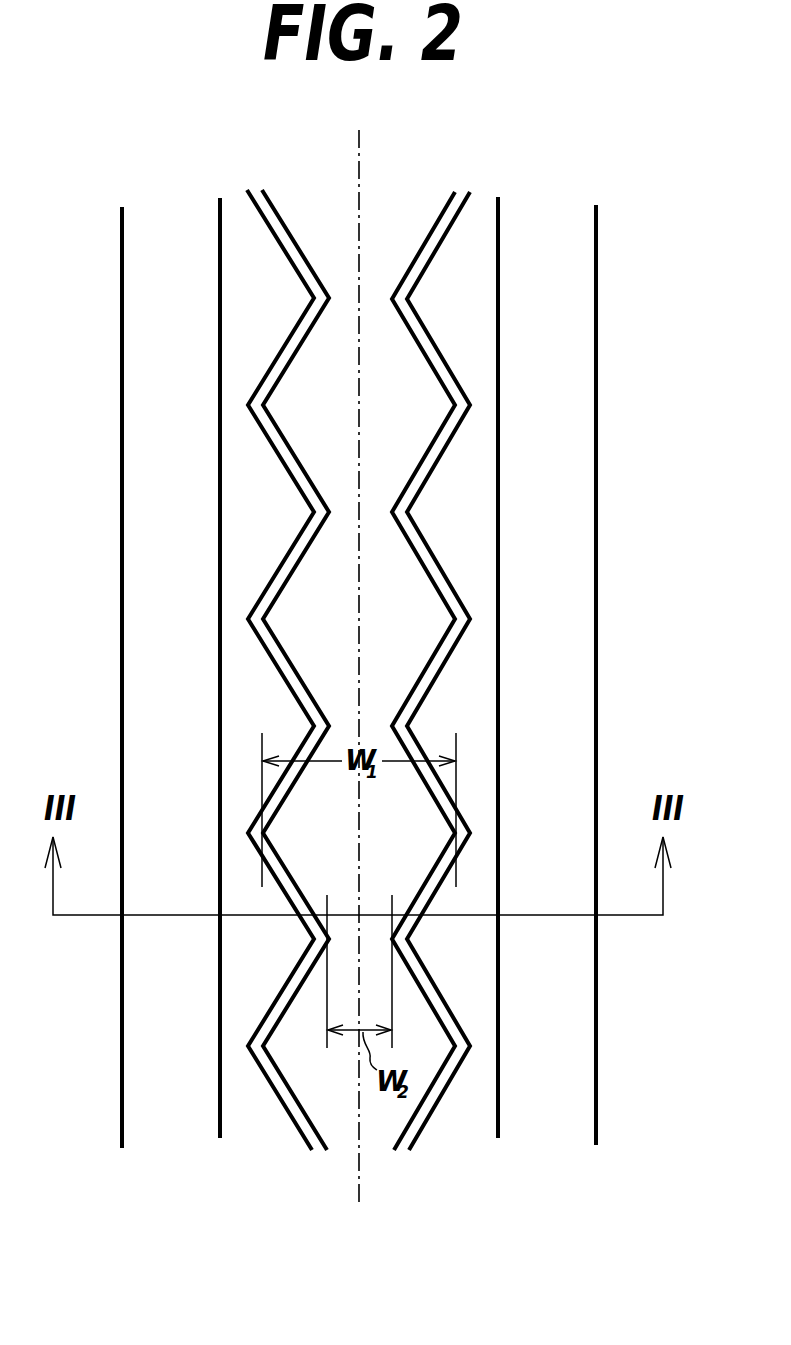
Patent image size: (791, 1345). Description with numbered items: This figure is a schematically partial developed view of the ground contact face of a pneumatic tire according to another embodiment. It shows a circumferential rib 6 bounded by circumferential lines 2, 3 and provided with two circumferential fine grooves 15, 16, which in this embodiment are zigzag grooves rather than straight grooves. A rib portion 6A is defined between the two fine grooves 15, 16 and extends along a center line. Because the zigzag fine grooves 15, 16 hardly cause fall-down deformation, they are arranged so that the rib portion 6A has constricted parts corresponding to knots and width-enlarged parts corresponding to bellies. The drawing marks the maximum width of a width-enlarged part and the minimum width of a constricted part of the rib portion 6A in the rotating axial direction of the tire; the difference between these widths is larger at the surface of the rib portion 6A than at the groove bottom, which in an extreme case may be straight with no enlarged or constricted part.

The first groove wall 2 is at (168, 287).
The second groove wall 3 is at (547, 263).
The circumferential rib 6 is at (372, 676).
The rib portion 6A is at (382, 363).
The circumferential fine groove 15 is at (302, 1125).
The circumferential fine groove 16 is at (415, 1123).